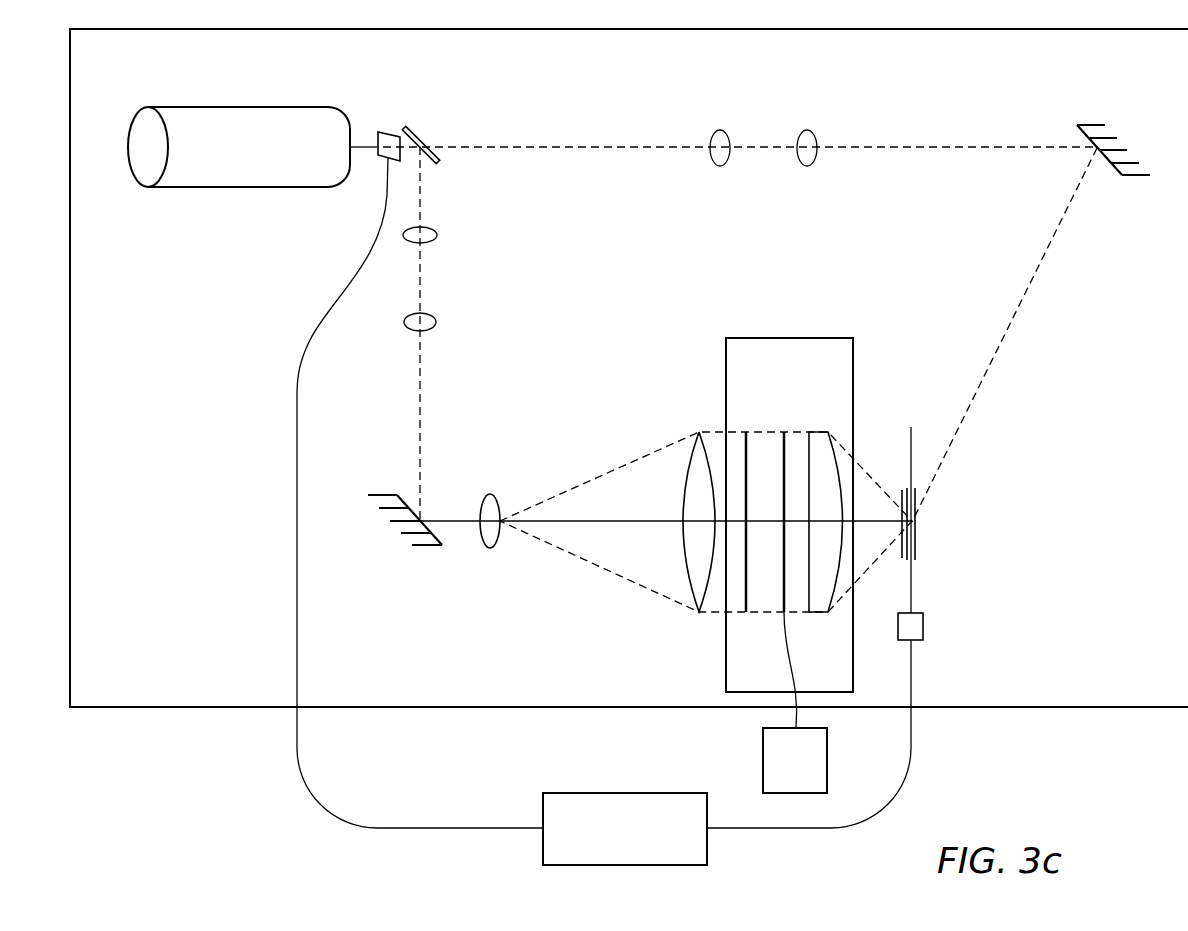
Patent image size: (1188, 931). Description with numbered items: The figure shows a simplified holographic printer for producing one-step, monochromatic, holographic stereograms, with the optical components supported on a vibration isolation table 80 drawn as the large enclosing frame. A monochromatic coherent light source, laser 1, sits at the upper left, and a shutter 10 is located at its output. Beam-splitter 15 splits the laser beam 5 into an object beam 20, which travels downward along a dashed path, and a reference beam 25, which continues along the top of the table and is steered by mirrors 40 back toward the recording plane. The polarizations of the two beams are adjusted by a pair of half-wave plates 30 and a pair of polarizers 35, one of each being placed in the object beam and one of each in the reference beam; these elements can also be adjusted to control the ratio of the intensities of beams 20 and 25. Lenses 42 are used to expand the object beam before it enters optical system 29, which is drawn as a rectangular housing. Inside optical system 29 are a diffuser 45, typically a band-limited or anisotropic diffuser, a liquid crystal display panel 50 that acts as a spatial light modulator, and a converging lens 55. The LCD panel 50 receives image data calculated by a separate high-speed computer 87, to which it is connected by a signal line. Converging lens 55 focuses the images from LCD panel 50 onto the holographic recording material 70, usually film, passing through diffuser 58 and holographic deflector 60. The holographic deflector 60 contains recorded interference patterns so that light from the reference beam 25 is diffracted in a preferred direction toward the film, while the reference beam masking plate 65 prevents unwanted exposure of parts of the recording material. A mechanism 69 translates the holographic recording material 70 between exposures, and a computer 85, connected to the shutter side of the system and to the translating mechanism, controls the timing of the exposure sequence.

The laser 1 is at (242, 187).
The beam 5 is at (365, 148).
The shutter 10 is at (385, 131).
The beam-splitter 15 is at (416, 130).
The object beam 20 is at (418, 383).
The reference beam 25 is at (1005, 336).
The optical system 29 is at (827, 338).
The half-wave plates 30 is at (720, 130).
The polarizers 35 is at (807, 130).
The mirrors 40 is at (1108, 130).
The lens 42 is at (490, 548).
The diffuser 45 is at (746, 432).
The liquid crystal display panel 50 is at (784, 432).
The converging lens 55 is at (818, 613).
The diffuser 58 is at (902, 492).
The holographic deflector 60 is at (902, 560).
The reference beam masking plate 65 is at (916, 535).
The mechanism for translating holographic recording material 69 is at (923, 632).
The holographic recording material 70 is at (911, 430).
The vibration isolation table 80 is at (188, 707).
The computer 85 is at (625, 829).
The high-speed computer 87 is at (795, 760).